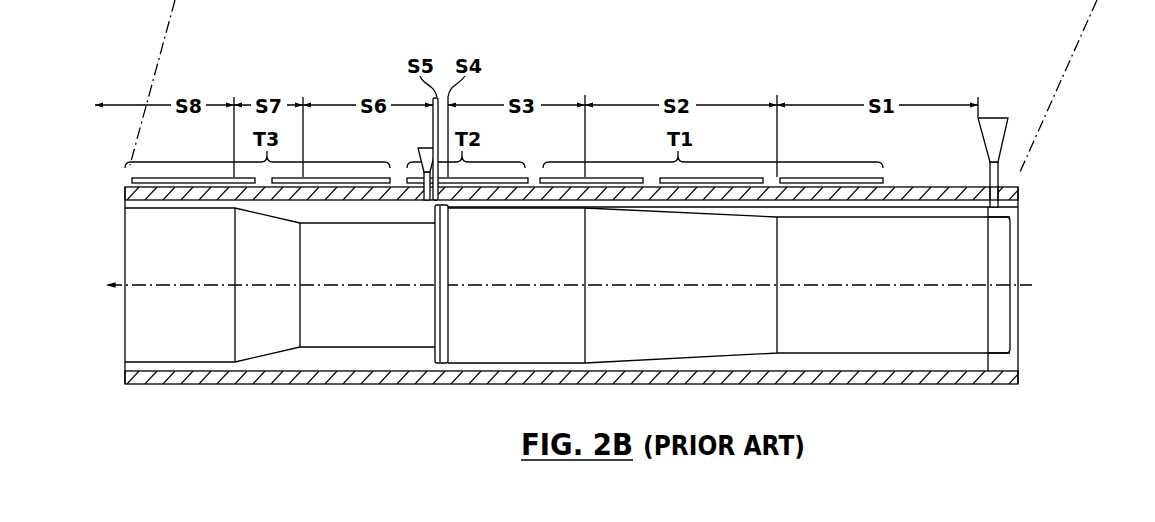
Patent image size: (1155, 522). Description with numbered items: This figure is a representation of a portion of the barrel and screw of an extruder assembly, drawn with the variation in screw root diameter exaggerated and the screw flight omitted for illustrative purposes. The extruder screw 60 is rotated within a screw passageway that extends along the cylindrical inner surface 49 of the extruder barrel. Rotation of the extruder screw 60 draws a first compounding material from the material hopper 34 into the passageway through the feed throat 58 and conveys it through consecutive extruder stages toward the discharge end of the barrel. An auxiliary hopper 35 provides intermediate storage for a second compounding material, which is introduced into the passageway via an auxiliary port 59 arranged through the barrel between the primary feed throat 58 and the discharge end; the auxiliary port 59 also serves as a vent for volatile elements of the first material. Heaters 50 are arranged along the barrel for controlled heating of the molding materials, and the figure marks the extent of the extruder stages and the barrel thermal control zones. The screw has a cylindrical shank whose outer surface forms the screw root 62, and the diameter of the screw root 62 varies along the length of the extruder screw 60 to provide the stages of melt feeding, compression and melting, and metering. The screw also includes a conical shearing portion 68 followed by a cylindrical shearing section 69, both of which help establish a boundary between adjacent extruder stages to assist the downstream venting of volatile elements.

The material hopper 34 is at (1000, 128).
The auxiliary hopper 35 is at (420, 153).
The cylindrical inner surface 49 is at (285, 371).
The heaters 50 is at (867, 176).
The feed throat 58 is at (993, 186).
The auxiliary port 59 is at (431, 200).
The extruder screw 60 is at (908, 342).
The screw root 62 is at (993, 213).
The conical shearing portion 68 is at (445, 343).
The cylindrical shearing section 69 is at (438, 327).